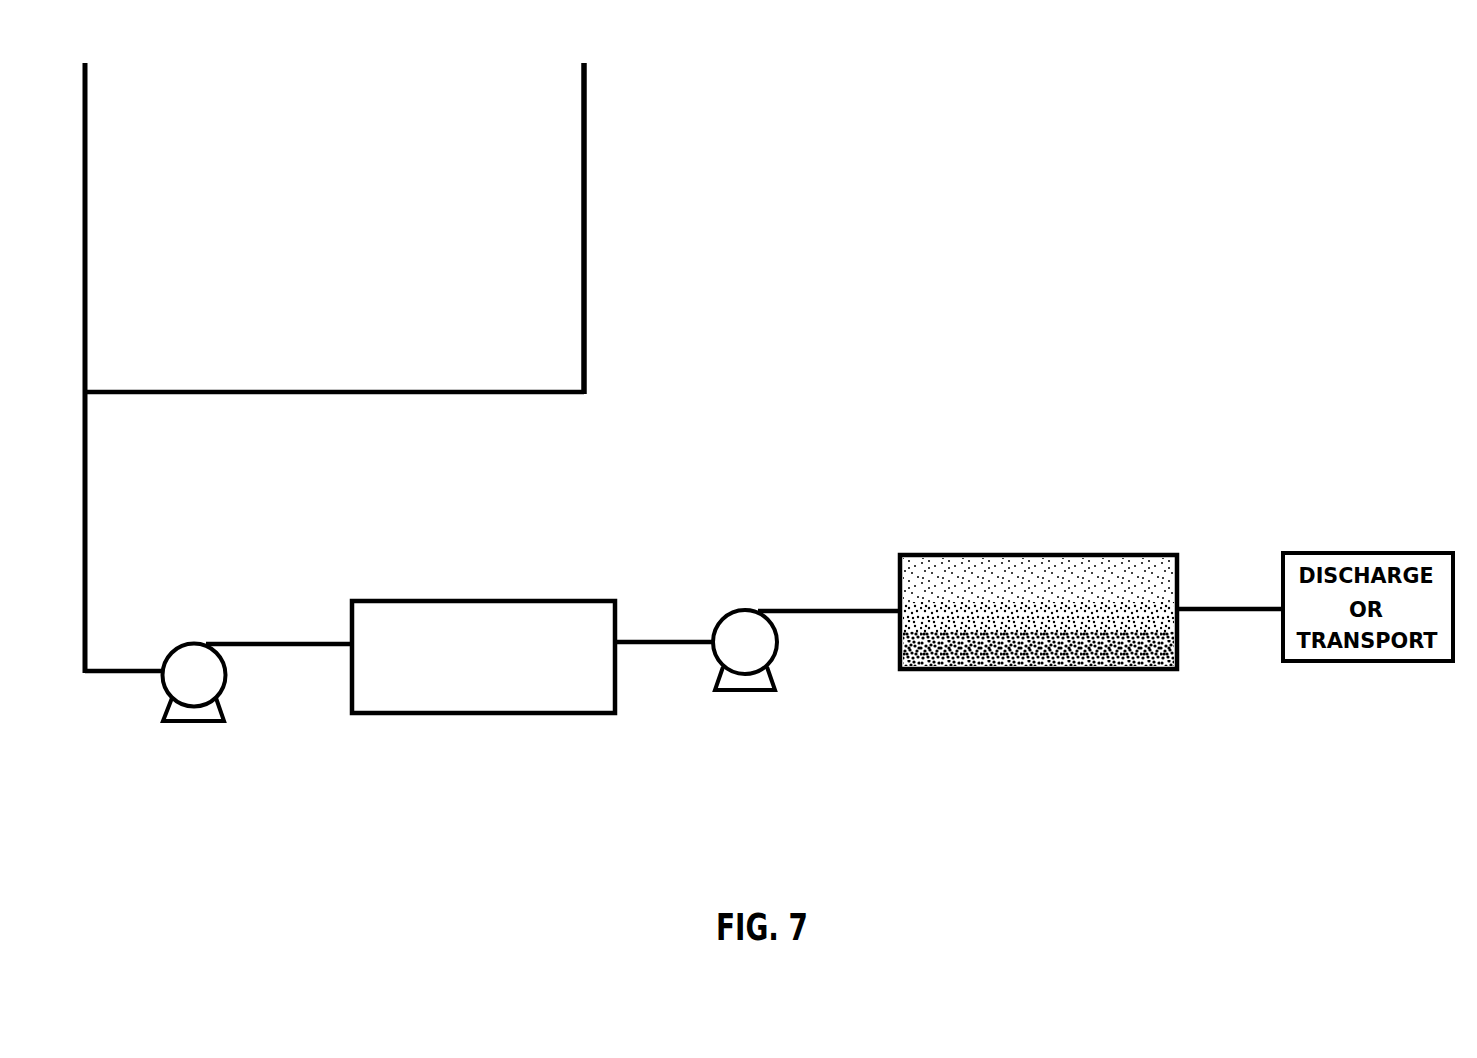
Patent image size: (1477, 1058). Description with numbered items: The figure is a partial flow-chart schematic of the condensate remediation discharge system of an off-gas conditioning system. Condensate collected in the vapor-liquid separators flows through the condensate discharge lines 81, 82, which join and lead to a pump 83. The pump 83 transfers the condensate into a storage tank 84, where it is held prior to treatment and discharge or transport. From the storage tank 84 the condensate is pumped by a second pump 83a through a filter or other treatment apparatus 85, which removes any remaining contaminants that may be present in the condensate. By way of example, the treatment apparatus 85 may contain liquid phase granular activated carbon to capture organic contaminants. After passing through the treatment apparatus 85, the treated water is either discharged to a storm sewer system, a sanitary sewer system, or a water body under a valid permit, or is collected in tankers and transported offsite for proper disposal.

The condensate discharge line 81 is at (88, 237).
The condensate discharge line 82 is at (588, 236).
The pump 83 is at (207, 690).
The pump 83a is at (765, 656).
The storage tank 84 is at (447, 600).
The treatment apparatus 85 is at (1026, 554).